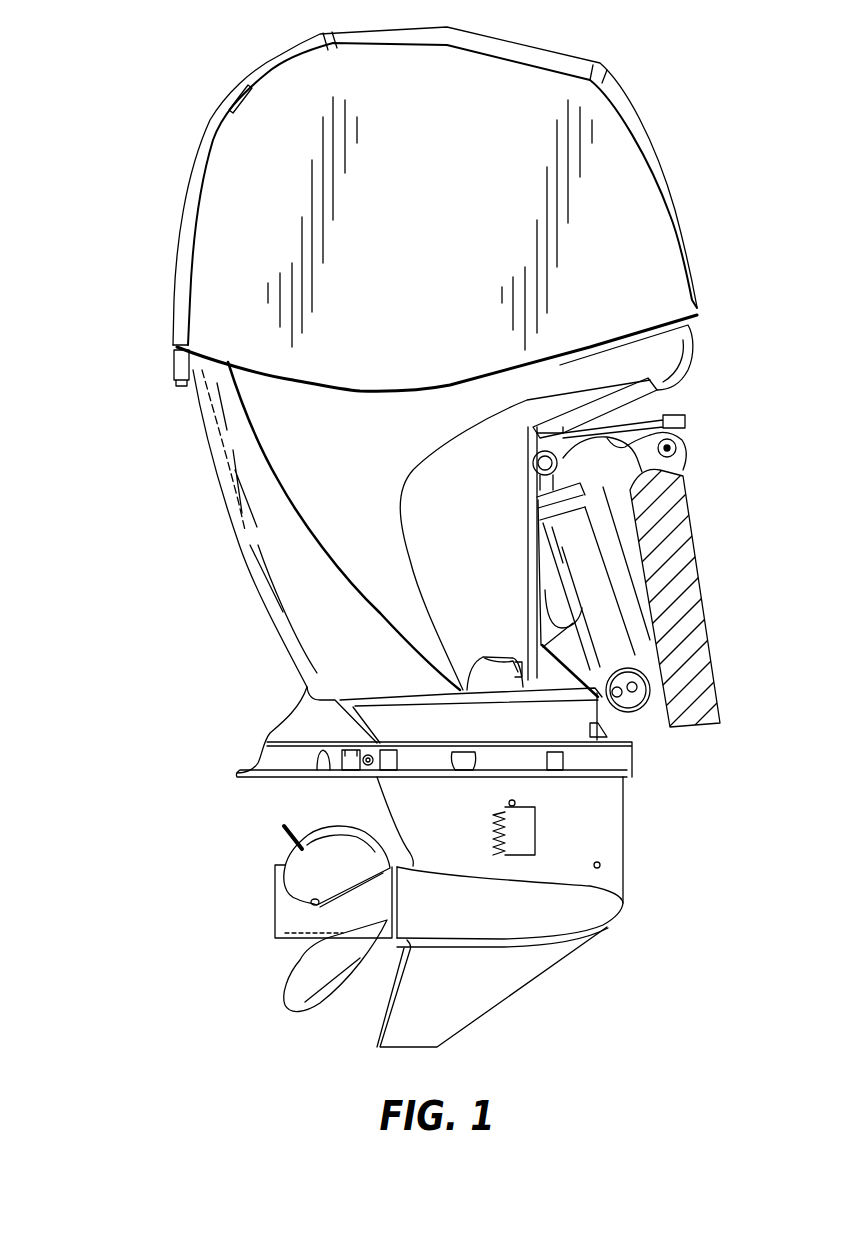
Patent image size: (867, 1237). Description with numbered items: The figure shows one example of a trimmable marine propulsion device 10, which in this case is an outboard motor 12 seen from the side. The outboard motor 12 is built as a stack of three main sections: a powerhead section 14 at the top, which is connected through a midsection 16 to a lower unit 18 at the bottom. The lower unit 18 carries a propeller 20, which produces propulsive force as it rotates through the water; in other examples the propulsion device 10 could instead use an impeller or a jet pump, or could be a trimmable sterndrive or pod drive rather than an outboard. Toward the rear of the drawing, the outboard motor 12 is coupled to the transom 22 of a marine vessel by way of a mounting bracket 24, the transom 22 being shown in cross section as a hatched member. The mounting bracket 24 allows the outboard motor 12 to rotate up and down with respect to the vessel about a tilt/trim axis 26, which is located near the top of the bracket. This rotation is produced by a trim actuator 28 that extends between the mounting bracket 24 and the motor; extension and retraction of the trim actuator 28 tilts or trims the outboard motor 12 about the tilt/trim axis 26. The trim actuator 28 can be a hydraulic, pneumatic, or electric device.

The trimmable marine propulsion device 10 is at (693, 52).
The outboard motor 12 is at (178, 262).
The powerhead section 14 is at (445, 209).
The midsection 16 is at (353, 473).
The lower unit 18 is at (590, 828).
The propeller 20 is at (303, 973).
The transom 22 is at (703, 617).
The mounting bracket 24 is at (595, 419).
The tilt/trim axis 26 is at (688, 441).
The trim actuator 28 is at (598, 593).